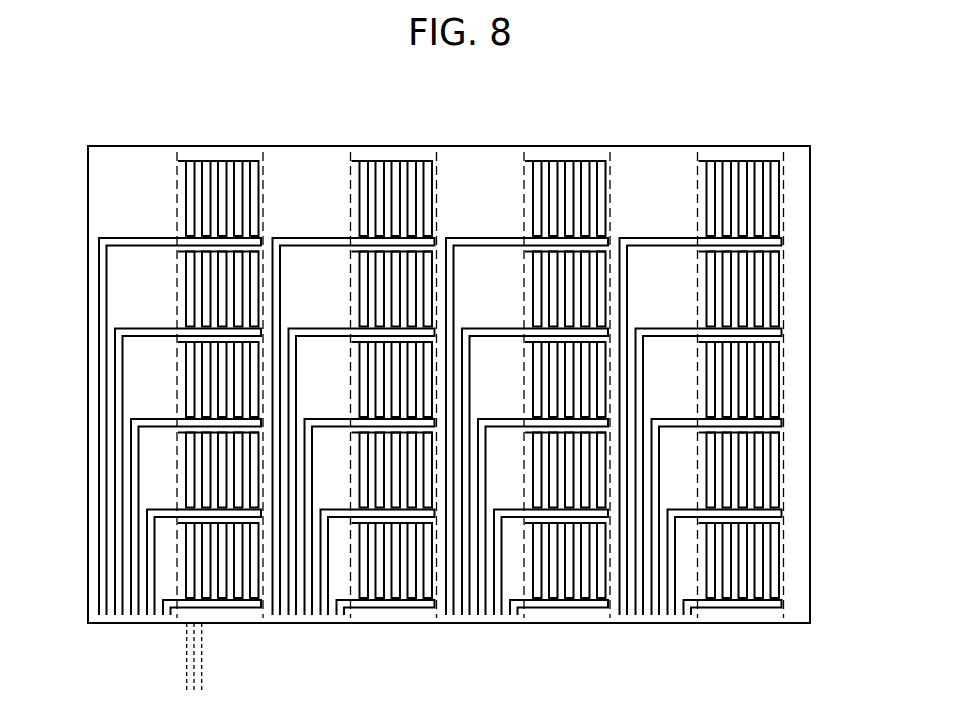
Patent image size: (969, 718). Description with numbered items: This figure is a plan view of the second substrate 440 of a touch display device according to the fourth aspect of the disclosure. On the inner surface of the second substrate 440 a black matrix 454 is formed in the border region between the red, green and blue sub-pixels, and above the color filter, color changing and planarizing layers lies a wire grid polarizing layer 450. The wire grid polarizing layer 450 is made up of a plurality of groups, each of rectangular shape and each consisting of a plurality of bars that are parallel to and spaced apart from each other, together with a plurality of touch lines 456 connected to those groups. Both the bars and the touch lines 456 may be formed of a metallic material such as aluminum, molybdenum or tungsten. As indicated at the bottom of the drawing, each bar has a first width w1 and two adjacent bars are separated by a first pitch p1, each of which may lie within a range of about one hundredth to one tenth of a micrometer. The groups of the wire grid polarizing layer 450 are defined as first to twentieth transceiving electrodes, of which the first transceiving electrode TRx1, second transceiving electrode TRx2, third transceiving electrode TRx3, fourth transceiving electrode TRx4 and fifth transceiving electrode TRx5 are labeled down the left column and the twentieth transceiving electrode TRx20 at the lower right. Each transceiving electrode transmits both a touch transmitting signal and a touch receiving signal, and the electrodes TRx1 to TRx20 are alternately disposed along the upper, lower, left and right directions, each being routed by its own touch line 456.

The second substrate 440 is at (810, 184).
The wire grid polarizing layer 450 is at (753, 162).
The black matrix 454 is at (803, 331).
The touch lines 456 is at (98, 344).
The first transceiving electrode TRx1 is at (177, 205).
The second transceiving electrode TRx2 is at (177, 297).
The third transceiving electrode TRx3 is at (177, 389).
The fourth transceiving electrode TRx4 is at (177, 476).
The fifth transceiving electrode TRx5 is at (177, 567).
The twentieth transceiving electrode TRx20 is at (785, 548).
The first width w1 is at (227, 662).
The first pitch p1 is at (168, 682).